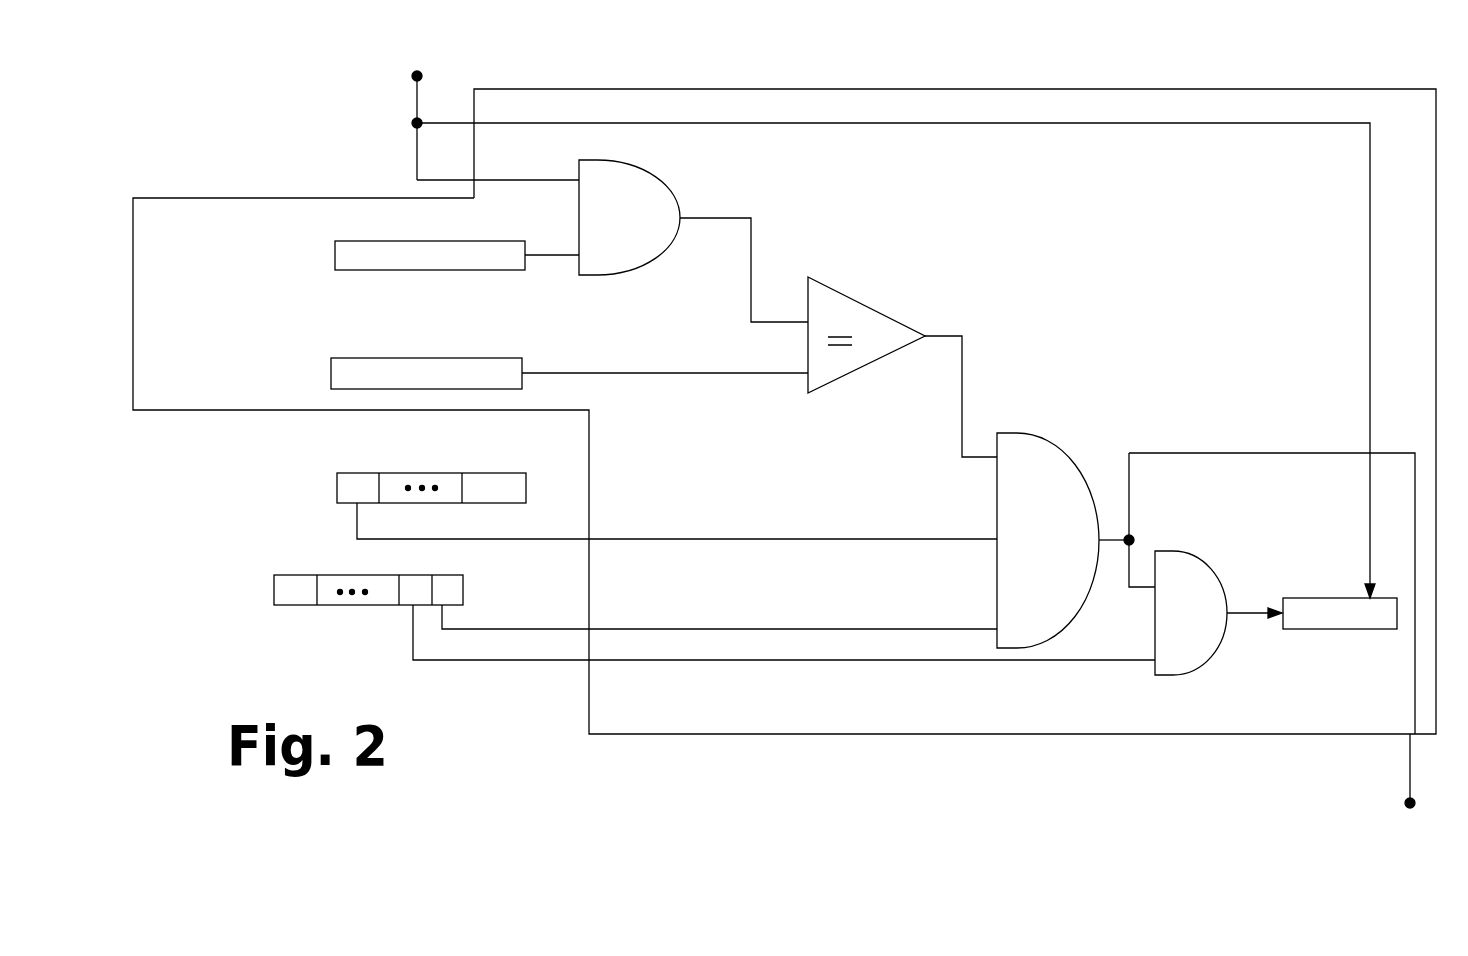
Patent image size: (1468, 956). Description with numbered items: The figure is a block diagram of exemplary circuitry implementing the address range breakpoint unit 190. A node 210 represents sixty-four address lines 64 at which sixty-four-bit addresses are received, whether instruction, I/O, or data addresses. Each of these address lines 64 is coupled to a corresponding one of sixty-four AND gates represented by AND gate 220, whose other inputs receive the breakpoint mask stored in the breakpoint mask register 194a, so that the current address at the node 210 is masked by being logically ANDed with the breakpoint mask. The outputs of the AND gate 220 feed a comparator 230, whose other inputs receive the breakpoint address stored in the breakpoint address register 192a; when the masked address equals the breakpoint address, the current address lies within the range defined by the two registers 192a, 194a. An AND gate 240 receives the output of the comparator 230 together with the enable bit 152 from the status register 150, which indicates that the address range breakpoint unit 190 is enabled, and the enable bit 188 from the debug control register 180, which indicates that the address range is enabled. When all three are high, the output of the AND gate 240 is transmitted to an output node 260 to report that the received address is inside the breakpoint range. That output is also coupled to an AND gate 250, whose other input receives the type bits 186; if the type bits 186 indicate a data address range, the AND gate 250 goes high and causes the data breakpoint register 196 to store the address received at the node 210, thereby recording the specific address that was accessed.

The address range breakpoint unit 190 is at (1042, 76).
The node 210 is at (412, 76).
The address lines 64 is at (430, 93).
The AND gate 220 is at (650, 161).
The breakpoint mask register 194a is at (357, 228).
The breakpoint address register 192a is at (362, 346).
The comparator 230 is at (838, 290).
The AND gate 240 is at (1018, 433).
The AND gate 250 is at (1163, 551).
The status register 150 is at (365, 460).
The enable bit 152 is at (362, 488).
The debug control register 180 is at (317, 562).
The type bits 186 is at (414, 590).
The enable bit 188 is at (446, 590).
The data breakpoint register 196 is at (1318, 586).
The output node 260 is at (1404, 803).